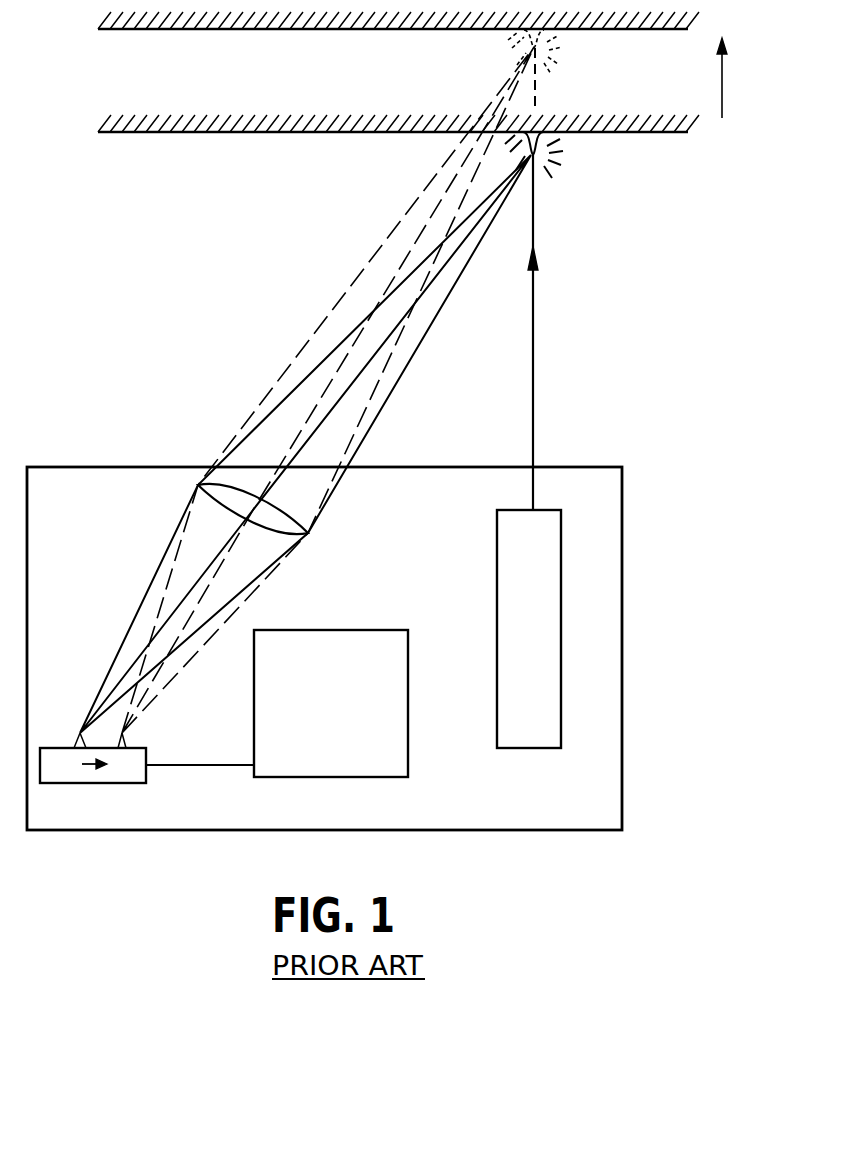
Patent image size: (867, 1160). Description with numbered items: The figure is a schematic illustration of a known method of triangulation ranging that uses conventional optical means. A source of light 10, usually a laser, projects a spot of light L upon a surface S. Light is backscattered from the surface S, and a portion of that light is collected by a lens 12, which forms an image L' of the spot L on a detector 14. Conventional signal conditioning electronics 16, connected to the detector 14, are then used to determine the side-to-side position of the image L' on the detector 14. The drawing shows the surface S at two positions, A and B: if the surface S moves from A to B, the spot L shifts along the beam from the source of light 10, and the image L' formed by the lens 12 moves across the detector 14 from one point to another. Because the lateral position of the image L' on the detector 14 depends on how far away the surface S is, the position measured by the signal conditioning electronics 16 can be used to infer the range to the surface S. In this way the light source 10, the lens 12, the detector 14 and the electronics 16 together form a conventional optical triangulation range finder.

The source of light 10 is at (561, 553).
The lens 12 is at (308, 533).
The detector 14 is at (90, 784).
The signal conditioning electronics 16 is at (409, 737).
The surface S is at (263, 132).
The spot of light L is at (544, 109).
The image of the spot L' is at (87, 725).
The first surface position A is at (721, 135).
The second surface position B is at (721, 67).